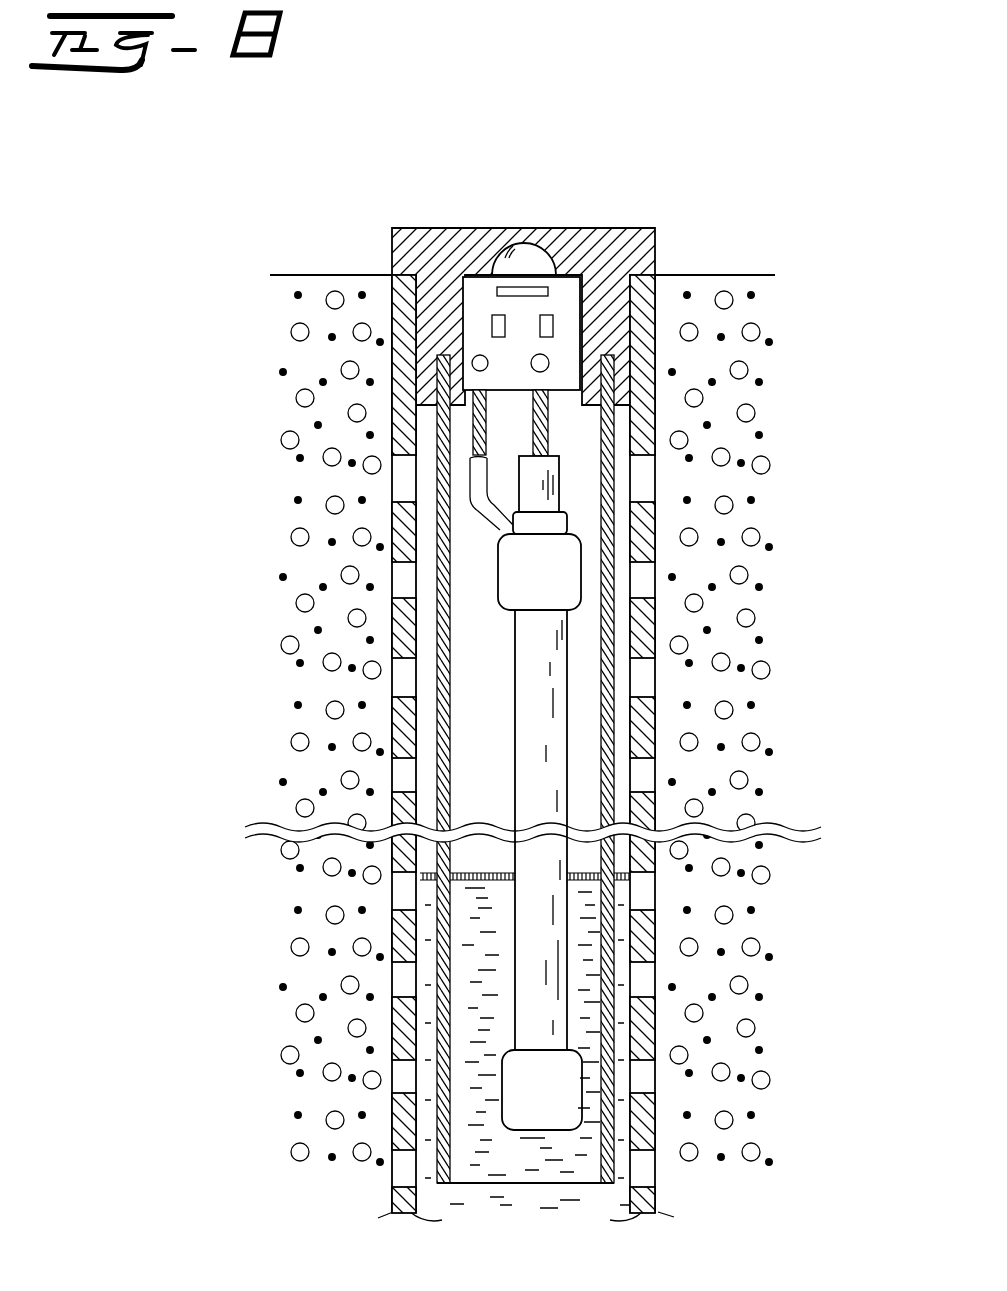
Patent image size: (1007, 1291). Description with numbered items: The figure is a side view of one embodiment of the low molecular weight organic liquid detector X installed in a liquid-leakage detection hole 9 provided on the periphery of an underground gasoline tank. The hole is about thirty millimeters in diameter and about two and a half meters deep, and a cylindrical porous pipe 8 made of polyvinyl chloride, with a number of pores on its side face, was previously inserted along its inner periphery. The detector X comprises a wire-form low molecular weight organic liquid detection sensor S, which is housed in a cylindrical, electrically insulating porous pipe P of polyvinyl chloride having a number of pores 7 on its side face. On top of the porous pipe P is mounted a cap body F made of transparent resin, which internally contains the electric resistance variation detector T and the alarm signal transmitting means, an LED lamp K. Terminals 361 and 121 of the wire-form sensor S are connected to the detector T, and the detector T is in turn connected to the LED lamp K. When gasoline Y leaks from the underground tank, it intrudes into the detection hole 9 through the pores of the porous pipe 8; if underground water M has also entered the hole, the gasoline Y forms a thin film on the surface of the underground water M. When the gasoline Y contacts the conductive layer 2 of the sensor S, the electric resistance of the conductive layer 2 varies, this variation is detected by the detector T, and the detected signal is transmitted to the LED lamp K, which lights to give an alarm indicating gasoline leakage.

The cap body F is at (468, 227).
The LED lamp K is at (592, 227).
The detector X is at (545, 258).
The electric resistance variation detector T is at (567, 334).
The terminal 121 is at (548, 433).
The terminal 361 is at (472, 448).
The porous pipe P is at (614, 532).
The porous pipe 8 is at (640, 630).
The liquid-leakage detection hole 9 is at (410, 1093).
The conductive layer 2 is at (548, 705).
The low molecular weight organic liquid detection sensor S is at (513, 762).
The gasoline Y is at (585, 880).
The underground water M is at (468, 990).
The pores 7 is at (580, 970).